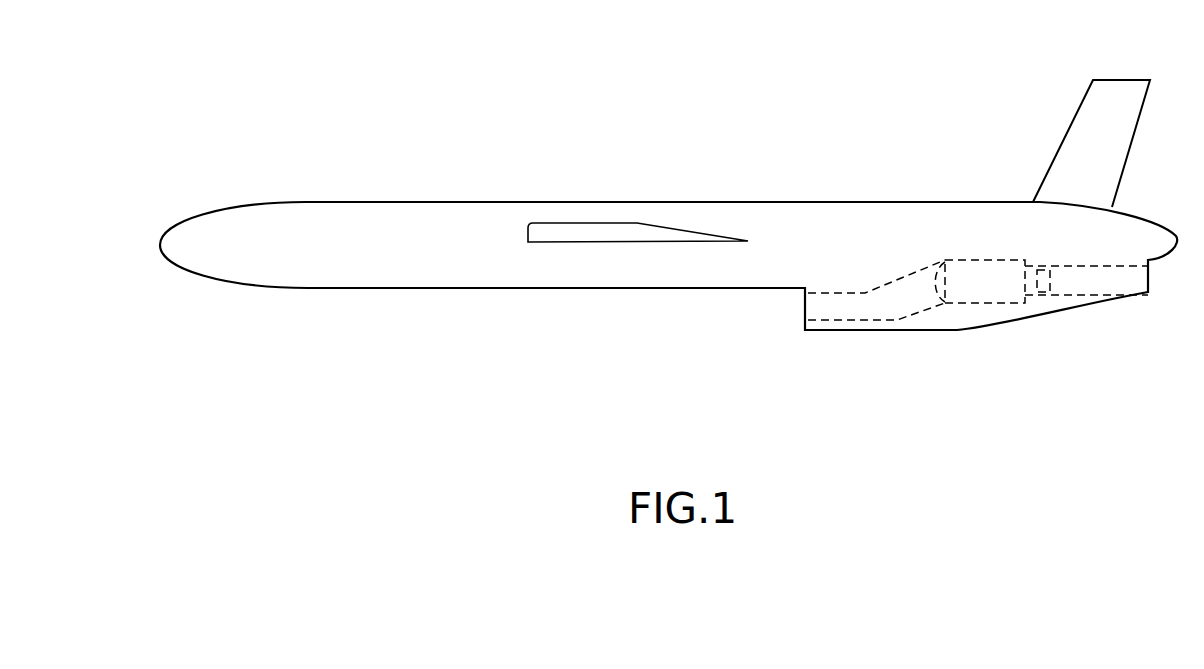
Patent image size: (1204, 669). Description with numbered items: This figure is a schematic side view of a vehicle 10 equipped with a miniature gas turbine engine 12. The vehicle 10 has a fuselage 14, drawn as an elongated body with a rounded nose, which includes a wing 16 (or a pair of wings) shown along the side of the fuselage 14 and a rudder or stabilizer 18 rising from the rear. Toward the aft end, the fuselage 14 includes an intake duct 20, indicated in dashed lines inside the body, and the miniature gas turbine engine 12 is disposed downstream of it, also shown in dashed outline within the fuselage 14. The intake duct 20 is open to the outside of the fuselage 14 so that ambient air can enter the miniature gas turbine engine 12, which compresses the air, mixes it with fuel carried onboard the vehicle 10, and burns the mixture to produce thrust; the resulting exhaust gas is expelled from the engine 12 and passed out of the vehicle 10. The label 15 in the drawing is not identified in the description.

The vehicle 10 is at (733, 177).
The miniature gas turbine engine 12 is at (978, 250).
The fuselage 14 is at (378, 200).
The wing 15 is at (595, 243).
The wing 16 is at (1113, 156).
The rudder or stabilizer 18 is at (865, 307).
The intake duct 20 is at (1085, 293).